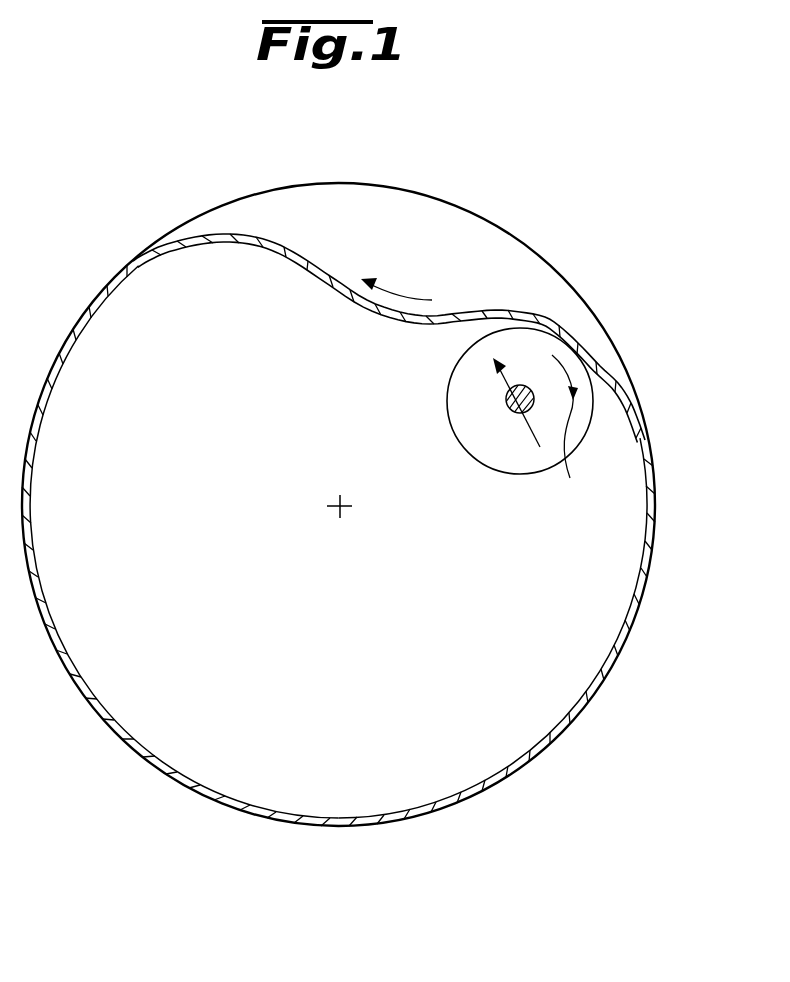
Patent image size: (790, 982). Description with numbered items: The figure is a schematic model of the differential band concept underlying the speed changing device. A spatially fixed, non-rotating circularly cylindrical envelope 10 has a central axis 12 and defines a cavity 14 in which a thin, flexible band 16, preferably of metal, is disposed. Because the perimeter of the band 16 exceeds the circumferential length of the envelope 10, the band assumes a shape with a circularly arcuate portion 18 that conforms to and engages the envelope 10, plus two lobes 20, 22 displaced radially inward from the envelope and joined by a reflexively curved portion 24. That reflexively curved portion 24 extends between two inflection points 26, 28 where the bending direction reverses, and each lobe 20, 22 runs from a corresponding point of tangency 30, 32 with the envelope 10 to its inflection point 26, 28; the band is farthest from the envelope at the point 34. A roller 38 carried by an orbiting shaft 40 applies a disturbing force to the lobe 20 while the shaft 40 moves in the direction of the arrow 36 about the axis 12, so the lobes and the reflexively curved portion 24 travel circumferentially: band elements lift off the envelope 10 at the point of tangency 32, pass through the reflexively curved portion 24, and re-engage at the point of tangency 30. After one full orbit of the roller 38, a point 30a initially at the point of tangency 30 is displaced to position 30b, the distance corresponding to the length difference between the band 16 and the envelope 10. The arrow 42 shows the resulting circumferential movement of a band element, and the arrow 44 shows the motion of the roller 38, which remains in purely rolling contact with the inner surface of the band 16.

The circularly cylindrical envelope 10 is at (446, 203).
The central axis 12 is at (343, 503).
The cavity 14 is at (203, 760).
The band 16 is at (432, 818).
The circularly arcuate portion 18 is at (578, 717).
The lobe 20 is at (565, 331).
The lobe 22 is at (253, 237).
The reflexively curved portion 24 is at (337, 289).
The inflection point 26 is at (462, 308).
The inflection point 28 is at (333, 270).
The point of tangency 30 is at (643, 414).
The point 30a is at (641, 439).
The position 30b is at (600, 367).
The point of tangency 32 is at (127, 265).
The point 34 is at (384, 319).
The arrow 36 is at (530, 417).
The roller 38 is at (523, 476).
The shaft 40 is at (505, 402).
The arrow 42 is at (394, 296).
The arrow 44 is at (566, 430).